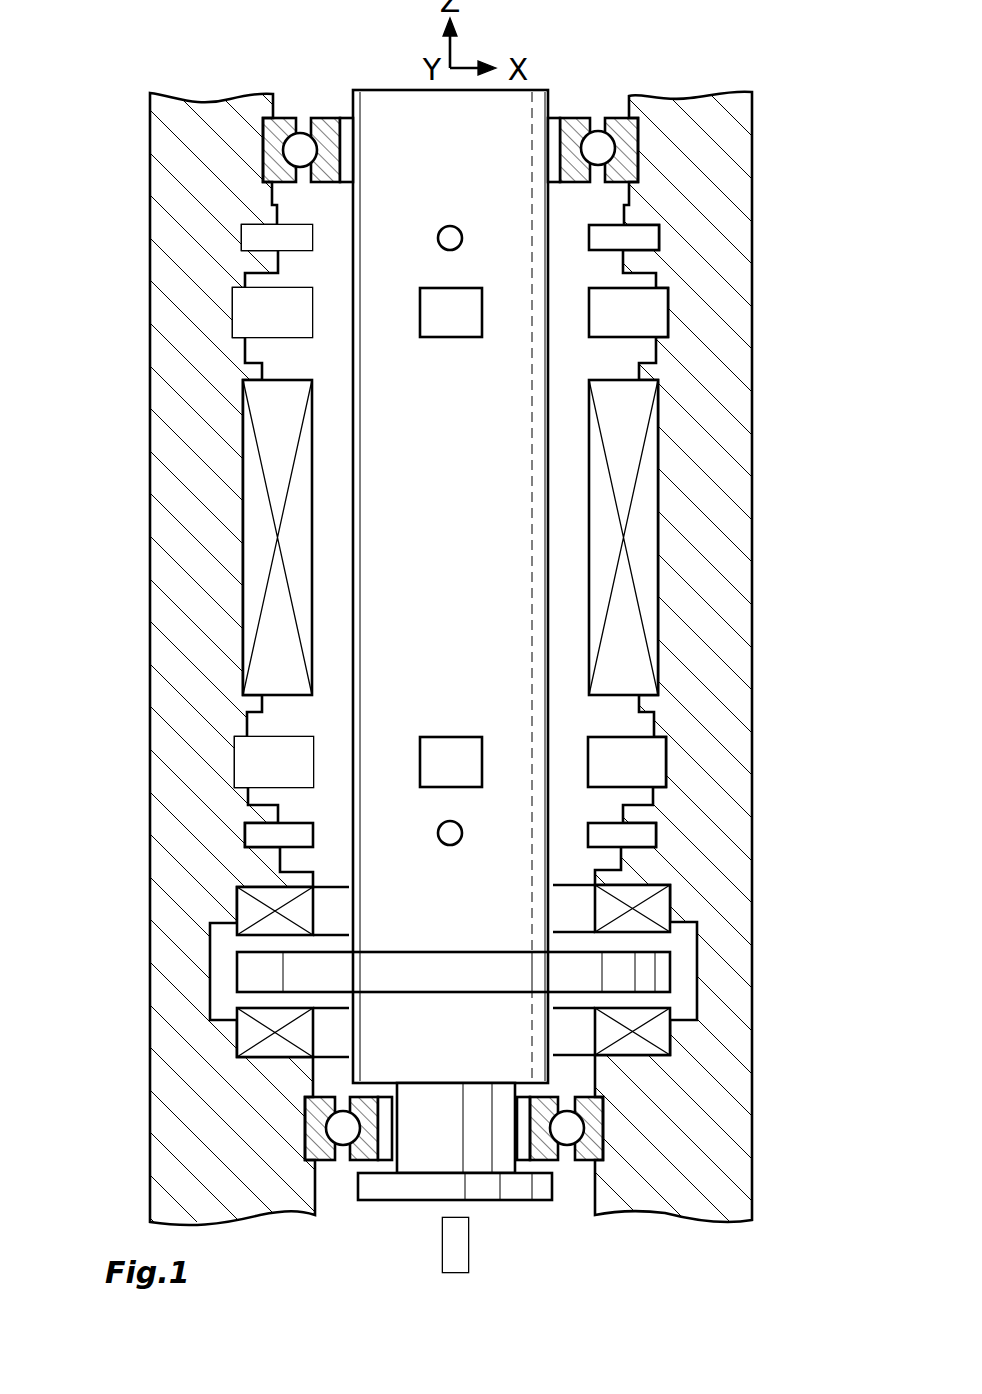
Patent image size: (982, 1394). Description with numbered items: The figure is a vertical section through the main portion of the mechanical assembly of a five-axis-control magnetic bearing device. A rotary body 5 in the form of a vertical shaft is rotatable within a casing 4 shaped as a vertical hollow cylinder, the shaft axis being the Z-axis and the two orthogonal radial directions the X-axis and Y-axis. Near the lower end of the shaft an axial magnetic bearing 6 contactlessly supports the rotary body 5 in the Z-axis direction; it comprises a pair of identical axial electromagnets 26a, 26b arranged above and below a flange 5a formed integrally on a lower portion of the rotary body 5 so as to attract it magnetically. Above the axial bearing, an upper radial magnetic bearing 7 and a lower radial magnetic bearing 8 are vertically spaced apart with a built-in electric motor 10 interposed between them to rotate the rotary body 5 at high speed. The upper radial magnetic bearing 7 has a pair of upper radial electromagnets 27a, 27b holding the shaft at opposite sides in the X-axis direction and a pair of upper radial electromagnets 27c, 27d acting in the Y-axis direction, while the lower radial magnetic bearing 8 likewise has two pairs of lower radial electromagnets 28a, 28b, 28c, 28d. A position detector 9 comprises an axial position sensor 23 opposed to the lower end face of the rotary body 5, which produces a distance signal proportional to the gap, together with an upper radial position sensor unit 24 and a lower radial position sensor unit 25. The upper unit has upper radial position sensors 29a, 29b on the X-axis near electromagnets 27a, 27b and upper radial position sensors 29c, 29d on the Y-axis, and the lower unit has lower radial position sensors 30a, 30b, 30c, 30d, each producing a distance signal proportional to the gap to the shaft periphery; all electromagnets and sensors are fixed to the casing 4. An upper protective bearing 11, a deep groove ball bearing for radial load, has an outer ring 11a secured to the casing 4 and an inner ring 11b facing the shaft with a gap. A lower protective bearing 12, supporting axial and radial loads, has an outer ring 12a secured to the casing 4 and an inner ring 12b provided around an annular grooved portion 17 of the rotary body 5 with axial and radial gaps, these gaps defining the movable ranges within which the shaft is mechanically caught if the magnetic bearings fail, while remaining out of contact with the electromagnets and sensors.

The casing 4 is at (186, 1102).
The rotary body 5 is at (500, 1196).
The flange 5a is at (660, 972).
The axial magnetic bearing 6 is at (236, 906).
The upper radial magnetic bearing 7 is at (231, 335).
The lower radial magnetic bearing 8 is at (234, 742).
The position detector 9 is at (441, 1235).
The electric motor 10 is at (242, 523).
The upper protective bearing 11 is at (461, 99).
The outer ring 11a is at (622, 118).
The inner ring 11b is at (578, 118).
The lower protective bearing 12 is at (474, 1187).
The outer ring 12a is at (588, 1165).
The inner ring 12b is at (552, 1162).
The annular grooved portion 17 is at (428, 1130).
The axial position sensor 23 is at (467, 1255).
The upper radial position sensor unit 24 is at (240, 247).
The lower radial position sensor unit 25 is at (240, 832).
The axial electromagnet 26a is at (660, 905).
The axial electromagnet 26b is at (660, 1040).
The upper radial electromagnet 27a is at (660, 312).
The upper radial electromagnet 27b is at (252, 312).
The upper radial electromagnet 27c is at (452, 373).
The upper radial electromagnet 27d is at (451, 310).
The lower radial electromagnet 28a is at (660, 760).
The lower radial electromagnet 28b is at (246, 766).
The lower radial electromagnet 28c is at (458, 695).
The lower radial electromagnet 28d is at (452, 752).
The upper radial position sensor 29a is at (650, 238).
The upper radial position sensor 29b is at (243, 236).
The upper radial position sensor 29c is at (458, 191).
The upper radial position sensor 29d is at (449, 235).
The lower radial position sensor 30a is at (660, 835).
The lower radial position sensor 30b is at (247, 840).
The lower radial position sensor 30c is at (458, 879).
The lower radial position sensor 30d is at (450, 843).